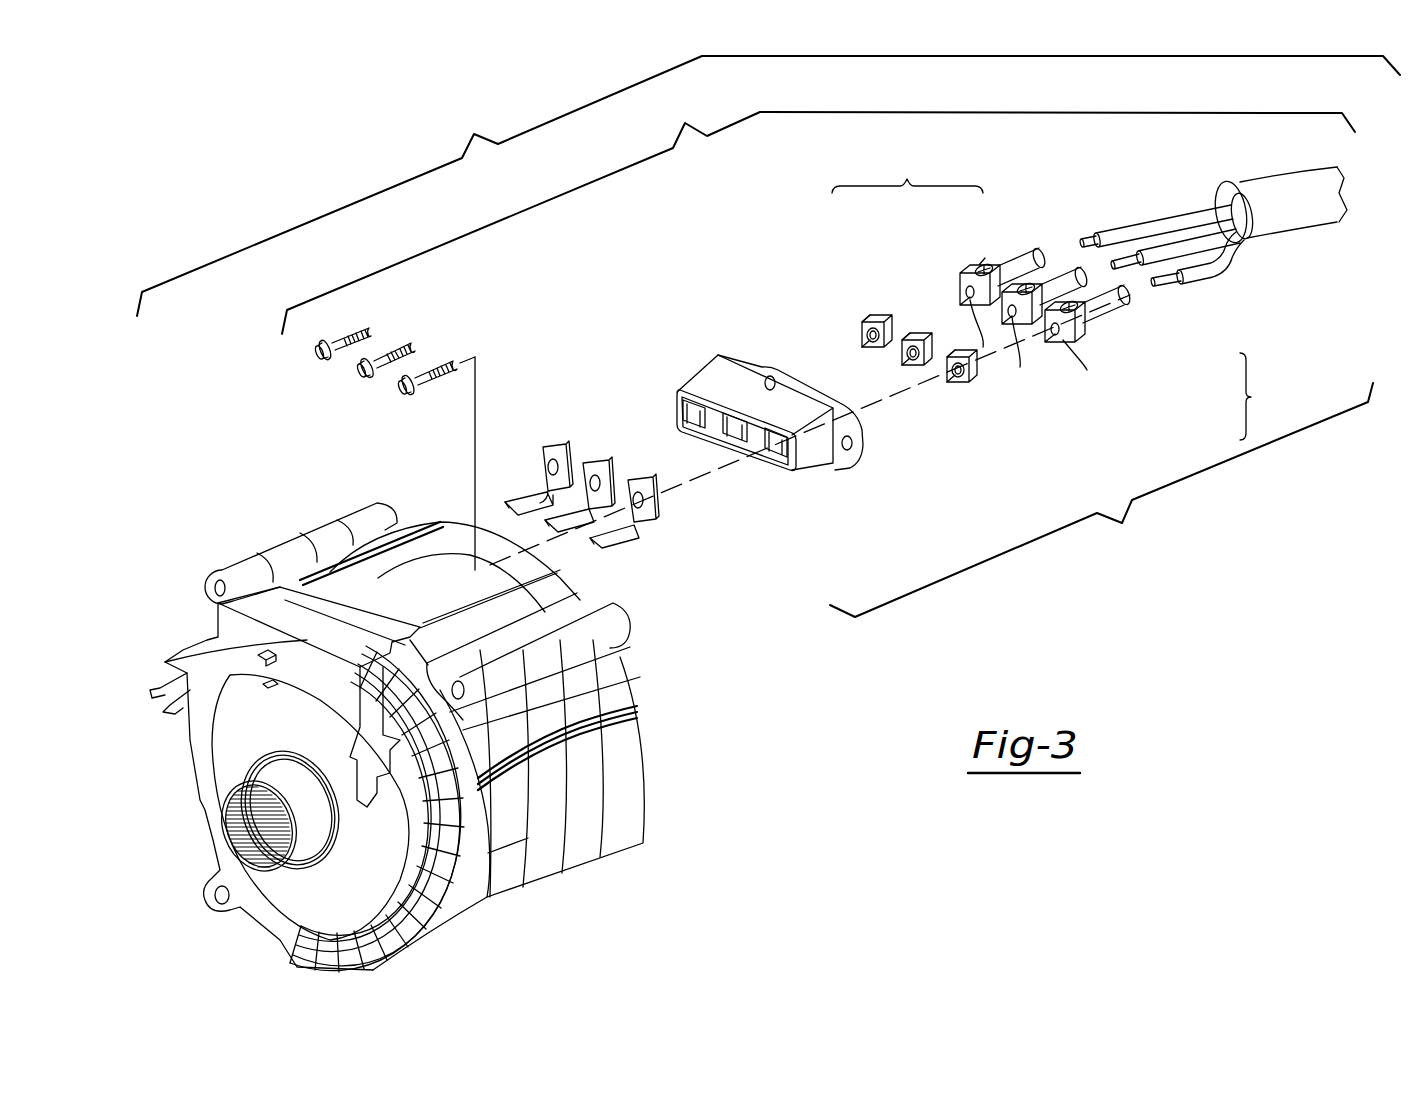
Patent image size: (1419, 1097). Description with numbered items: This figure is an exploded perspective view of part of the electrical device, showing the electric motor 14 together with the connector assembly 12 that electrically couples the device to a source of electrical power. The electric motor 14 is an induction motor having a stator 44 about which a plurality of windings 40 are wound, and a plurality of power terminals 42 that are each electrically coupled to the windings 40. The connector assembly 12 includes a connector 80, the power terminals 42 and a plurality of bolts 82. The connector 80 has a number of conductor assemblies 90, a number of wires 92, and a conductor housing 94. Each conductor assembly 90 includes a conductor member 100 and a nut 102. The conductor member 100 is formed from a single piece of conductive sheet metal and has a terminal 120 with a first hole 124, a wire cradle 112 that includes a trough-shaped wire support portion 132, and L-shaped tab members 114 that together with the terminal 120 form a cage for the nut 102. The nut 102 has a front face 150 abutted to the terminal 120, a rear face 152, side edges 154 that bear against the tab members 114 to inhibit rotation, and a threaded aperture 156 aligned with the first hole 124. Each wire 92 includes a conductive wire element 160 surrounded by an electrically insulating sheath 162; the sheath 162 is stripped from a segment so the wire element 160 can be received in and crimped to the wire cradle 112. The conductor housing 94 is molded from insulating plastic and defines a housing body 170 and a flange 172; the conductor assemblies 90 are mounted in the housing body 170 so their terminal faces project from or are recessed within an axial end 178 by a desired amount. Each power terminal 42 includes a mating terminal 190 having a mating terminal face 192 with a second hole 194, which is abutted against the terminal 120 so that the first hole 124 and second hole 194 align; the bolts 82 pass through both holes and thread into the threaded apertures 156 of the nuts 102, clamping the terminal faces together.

The connector assembly 12 is at (768, 195).
The electric motor 14 is at (437, 738).
The windings 40 is at (440, 915).
The power terminals 42 is at (609, 478).
The stator 44 is at (613, 838).
The connector 80 is at (1101, 500).
The bolts 82 is at (388, 367).
The conductor assemblies 90 is at (1055, 295).
The wires 92 is at (1228, 250).
The conductor housing 94 is at (802, 425).
The conductor member 100 is at (1072, 279).
The nut 102 is at (980, 345).
The wire cradle 112 is at (1201, 276).
The tab members 114 is at (983, 272).
The terminal 120 is at (1065, 342).
The first hole 124 is at (1012, 318).
The wire support portion 132 is at (1030, 258).
The front face 150 is at (862, 337).
The rear face 152 is at (980, 352).
The side edges 154 is at (887, 343).
The threaded aperture 156 is at (866, 325).
The conductive wire element 160 is at (1175, 282).
The electrically insulating sheath 162 is at (1215, 265).
The housing body 170 is at (743, 425).
The flange 172 is at (833, 463).
The axial end 178 is at (712, 412).
The mating terminal 190 is at (548, 453).
The mating terminal face 192 is at (567, 463).
The second hole 194 is at (545, 467).